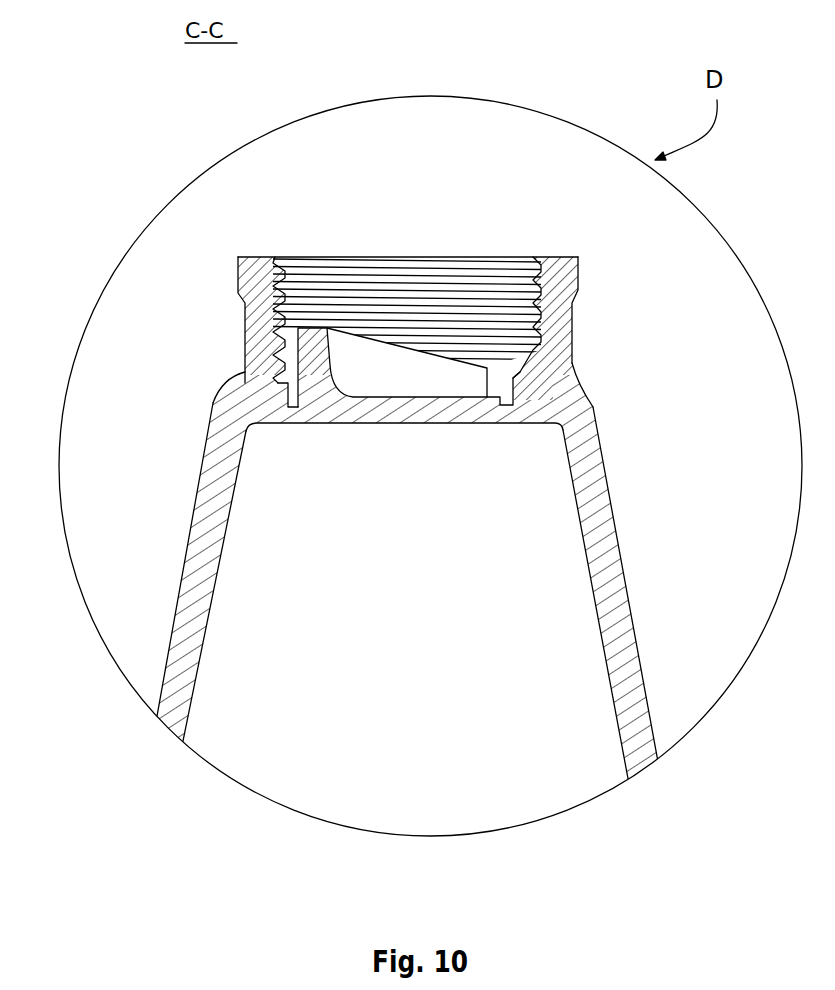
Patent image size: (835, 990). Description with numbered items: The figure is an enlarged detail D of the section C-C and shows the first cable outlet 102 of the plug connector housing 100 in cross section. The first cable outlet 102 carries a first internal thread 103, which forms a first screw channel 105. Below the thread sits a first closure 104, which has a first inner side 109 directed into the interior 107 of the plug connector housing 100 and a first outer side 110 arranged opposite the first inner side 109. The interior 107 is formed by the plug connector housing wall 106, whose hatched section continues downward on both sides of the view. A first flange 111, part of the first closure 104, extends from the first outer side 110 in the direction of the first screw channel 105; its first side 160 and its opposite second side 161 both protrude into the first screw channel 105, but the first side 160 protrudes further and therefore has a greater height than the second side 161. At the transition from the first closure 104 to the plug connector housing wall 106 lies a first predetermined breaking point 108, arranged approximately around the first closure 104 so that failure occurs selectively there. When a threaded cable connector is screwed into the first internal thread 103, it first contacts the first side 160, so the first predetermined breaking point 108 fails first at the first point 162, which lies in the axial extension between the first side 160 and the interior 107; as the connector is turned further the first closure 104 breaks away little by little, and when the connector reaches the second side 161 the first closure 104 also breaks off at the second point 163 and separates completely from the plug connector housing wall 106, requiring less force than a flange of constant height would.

The plug connector housing 100 is at (175, 530).
The first cable outlet 102 is at (238, 297).
The first internal thread 103 is at (518, 273).
The first closure 104 is at (357, 423).
The first screw channel 105 is at (430, 247).
The plug connector housing wall 106 is at (165, 657).
The interior 107 is at (269, 773).
The first predetermined breaking point 108 is at (290, 409).
The first inner side 109 is at (424, 434).
The first outer side 110 is at (406, 390).
The first flange 111 is at (310, 387).
The first side 160 is at (308, 340).
The second side 161 is at (533, 357).
The first point 162 is at (275, 407).
The second point 163 is at (583, 403).